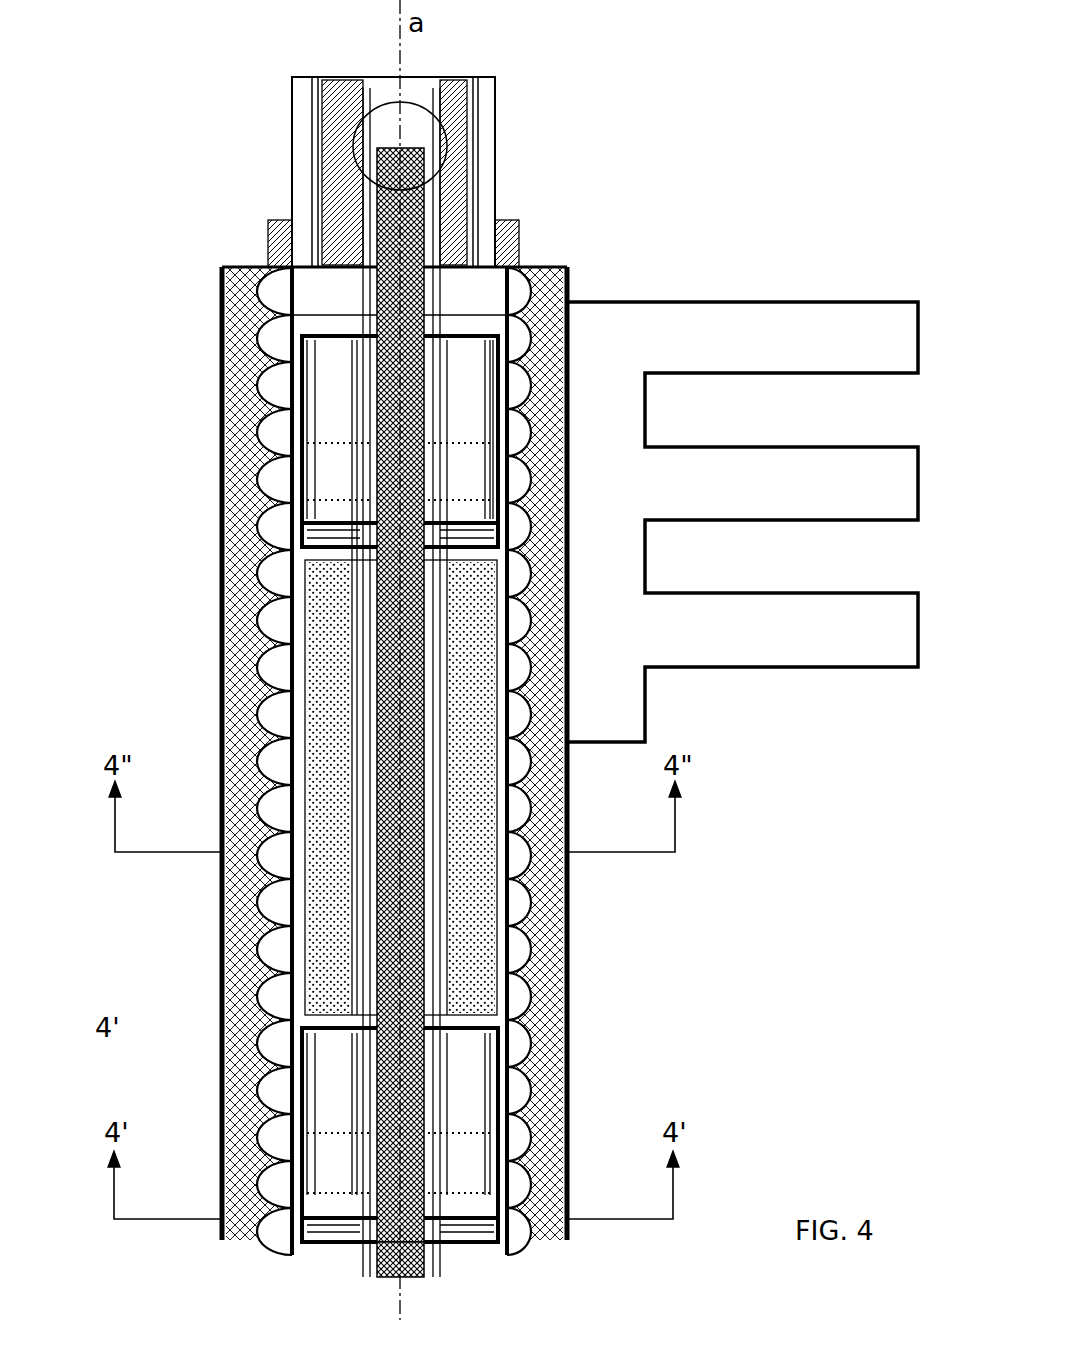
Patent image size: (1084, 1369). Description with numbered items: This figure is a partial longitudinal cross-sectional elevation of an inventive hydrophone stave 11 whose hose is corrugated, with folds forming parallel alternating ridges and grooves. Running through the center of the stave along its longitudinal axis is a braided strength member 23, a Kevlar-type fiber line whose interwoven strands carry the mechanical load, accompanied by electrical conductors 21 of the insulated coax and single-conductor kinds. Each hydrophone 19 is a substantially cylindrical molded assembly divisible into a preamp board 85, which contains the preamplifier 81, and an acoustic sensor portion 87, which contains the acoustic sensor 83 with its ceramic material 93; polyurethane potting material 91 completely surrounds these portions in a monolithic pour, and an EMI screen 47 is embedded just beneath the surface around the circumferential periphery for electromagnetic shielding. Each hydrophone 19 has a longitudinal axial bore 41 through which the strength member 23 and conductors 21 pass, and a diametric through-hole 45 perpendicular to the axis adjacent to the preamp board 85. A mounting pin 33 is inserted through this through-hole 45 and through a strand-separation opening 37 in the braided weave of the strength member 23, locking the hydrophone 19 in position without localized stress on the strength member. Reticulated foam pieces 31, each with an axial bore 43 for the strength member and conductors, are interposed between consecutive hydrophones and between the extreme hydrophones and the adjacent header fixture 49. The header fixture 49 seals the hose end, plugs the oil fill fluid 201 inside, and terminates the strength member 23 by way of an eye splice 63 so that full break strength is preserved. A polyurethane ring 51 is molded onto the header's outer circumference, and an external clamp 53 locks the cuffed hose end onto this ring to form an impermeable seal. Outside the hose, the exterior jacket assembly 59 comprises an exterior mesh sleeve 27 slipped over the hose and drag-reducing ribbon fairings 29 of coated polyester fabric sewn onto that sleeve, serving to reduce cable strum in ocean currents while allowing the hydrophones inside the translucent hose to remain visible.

The hydrophone stave 11 is at (197, 197).
The eye splice 63 is at (455, 130).
The header fixture 49 is at (497, 140).
The polyurethane ring 51 is at (487, 183).
The external clamp 53 is at (522, 237).
The ribbon fairing 29 is at (792, 300).
The exterior jacket assembly 59 is at (712, 736).
The electrical conductor 21 is at (597, 1070).
The hydrophone 19 is at (337, 433).
The acoustic sensor portion 87 is at (294, 429).
The acoustic sensor 83 is at (300, 403).
The preamp board 85 is at (267, 677).
The preamplifier 81 is at (399, 677).
The polyurethane potting material 91 is at (325, 493).
The diametric through-hole 45 is at (353, 480).
The mounting pin 33 is at (312, 562).
The braided strength member 23 is at (405, 428).
The reticulated foam piece 31 is at (320, 905).
The bore 43 is at (455, 925).
The oil fill fluid 201 is at (275, 948).
The exterior mesh sleeve 27 is at (535, 975).
The bore 41 is at (565, 1127).
The ceramic material 93 is at (327, 1098).
The EMI screen 47 is at (335, 1125).
The strand-separation opening 37 is at (397, 1222).